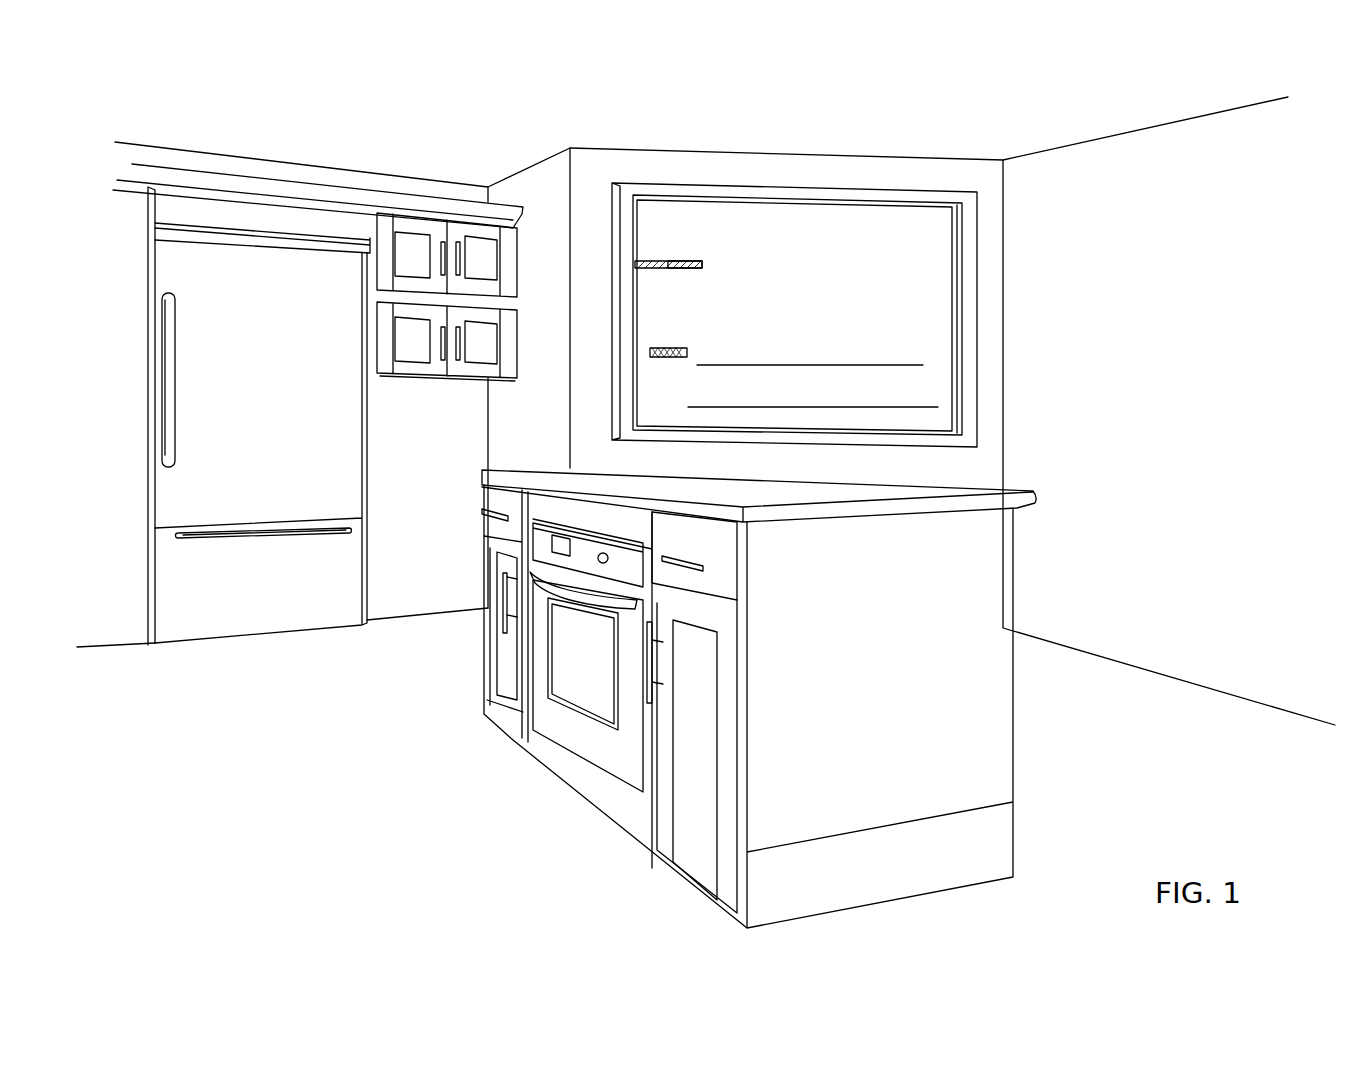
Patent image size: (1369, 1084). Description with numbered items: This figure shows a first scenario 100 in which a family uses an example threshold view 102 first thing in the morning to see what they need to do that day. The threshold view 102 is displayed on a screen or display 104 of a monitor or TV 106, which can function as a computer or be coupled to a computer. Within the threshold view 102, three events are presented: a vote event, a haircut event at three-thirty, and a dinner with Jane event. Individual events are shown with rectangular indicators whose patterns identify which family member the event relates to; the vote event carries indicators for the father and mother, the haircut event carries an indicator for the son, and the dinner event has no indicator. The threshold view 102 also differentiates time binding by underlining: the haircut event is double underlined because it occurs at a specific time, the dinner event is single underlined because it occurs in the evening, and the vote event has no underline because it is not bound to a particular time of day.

The first scenario 100 is at (765, 118).
The threshold view 102 is at (888, 233).
The screen or display 104 is at (920, 203).
The monitor or TV 106 is at (670, 178).